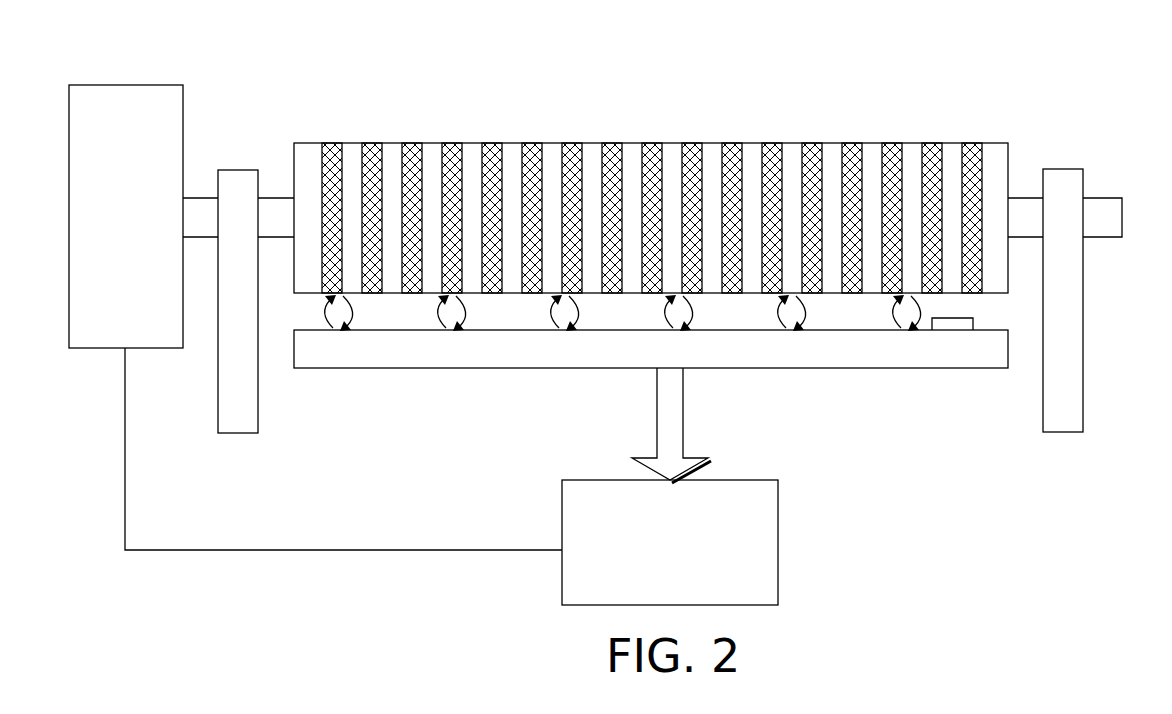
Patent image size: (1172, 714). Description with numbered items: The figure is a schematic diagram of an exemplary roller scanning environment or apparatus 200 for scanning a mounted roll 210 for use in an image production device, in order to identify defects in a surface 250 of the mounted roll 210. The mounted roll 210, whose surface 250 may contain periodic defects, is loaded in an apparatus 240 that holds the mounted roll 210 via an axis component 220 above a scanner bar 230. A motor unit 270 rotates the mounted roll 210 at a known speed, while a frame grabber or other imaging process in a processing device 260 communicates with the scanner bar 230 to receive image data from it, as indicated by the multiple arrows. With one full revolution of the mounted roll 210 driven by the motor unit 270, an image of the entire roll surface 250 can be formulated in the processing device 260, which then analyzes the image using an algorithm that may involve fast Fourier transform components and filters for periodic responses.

The roller scanning apparatus 200 is at (308, 54).
The mounted roll 210 is at (651, 181).
The axis component 220 is at (1103, 238).
The scanner bar 230 is at (898, 370).
The apparatus 240 is at (238, 434).
The surface 250 is at (532, 138).
The processing device 260 is at (779, 540).
The motor unit 270 is at (153, 350).